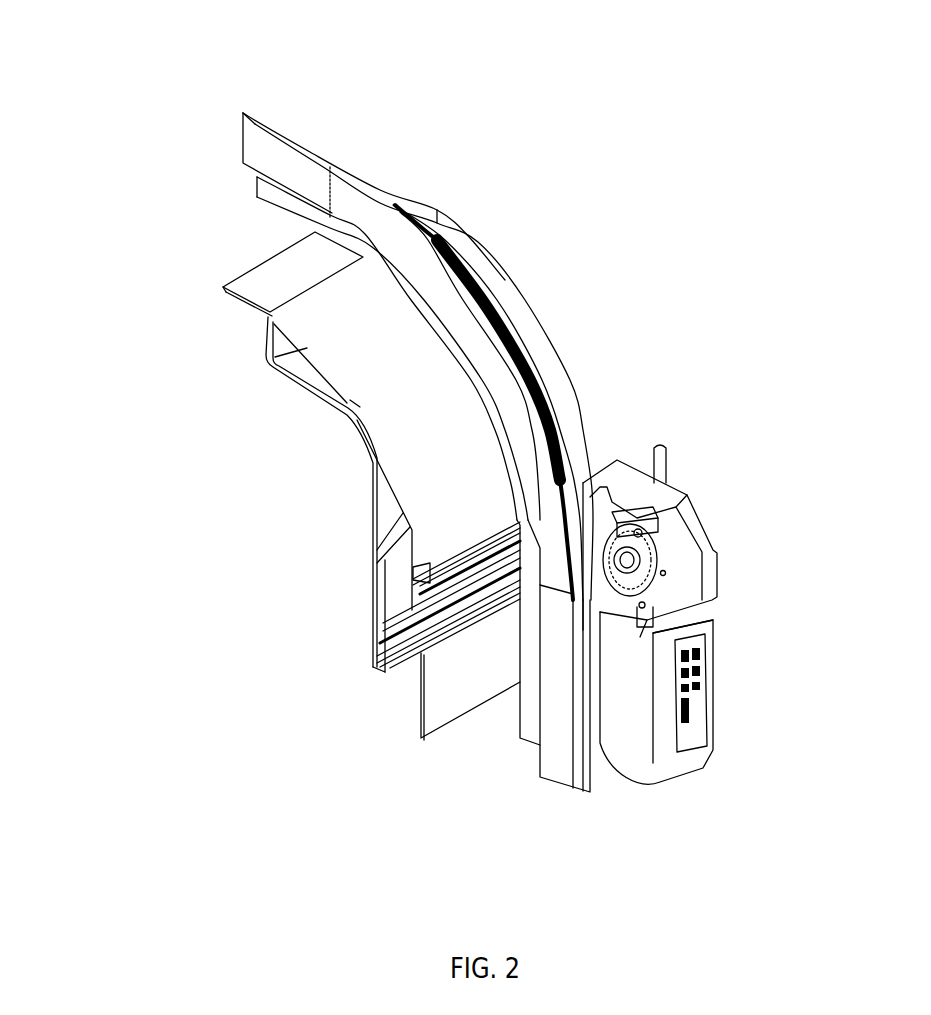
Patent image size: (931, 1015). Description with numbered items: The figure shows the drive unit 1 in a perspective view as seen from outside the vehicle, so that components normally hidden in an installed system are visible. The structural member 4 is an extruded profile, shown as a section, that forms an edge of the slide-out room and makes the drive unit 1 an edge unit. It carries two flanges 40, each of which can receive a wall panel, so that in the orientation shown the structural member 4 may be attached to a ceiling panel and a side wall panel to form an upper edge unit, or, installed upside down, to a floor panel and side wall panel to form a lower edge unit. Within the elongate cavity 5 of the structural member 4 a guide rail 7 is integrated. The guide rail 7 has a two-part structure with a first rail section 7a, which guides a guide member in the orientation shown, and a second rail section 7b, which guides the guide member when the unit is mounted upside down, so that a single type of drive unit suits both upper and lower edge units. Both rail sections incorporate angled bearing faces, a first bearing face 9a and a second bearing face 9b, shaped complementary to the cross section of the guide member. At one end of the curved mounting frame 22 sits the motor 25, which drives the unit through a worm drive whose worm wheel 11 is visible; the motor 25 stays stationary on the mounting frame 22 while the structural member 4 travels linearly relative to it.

The drive unit 1 is at (588, 248).
The structural member 4 is at (333, 313).
The elongate cavity 5 is at (385, 583).
The guide rail 7 is at (253, 633).
The first rail section 7a is at (395, 560).
The second rail section 7b is at (402, 618).
The first bearing face 9a is at (397, 612).
The second bearing face 9b is at (420, 625).
The worm wheel 11 is at (647, 556).
The mounting frame 22 is at (256, 152).
The motor 25 is at (627, 717).
The flange 40 is at (247, 310).